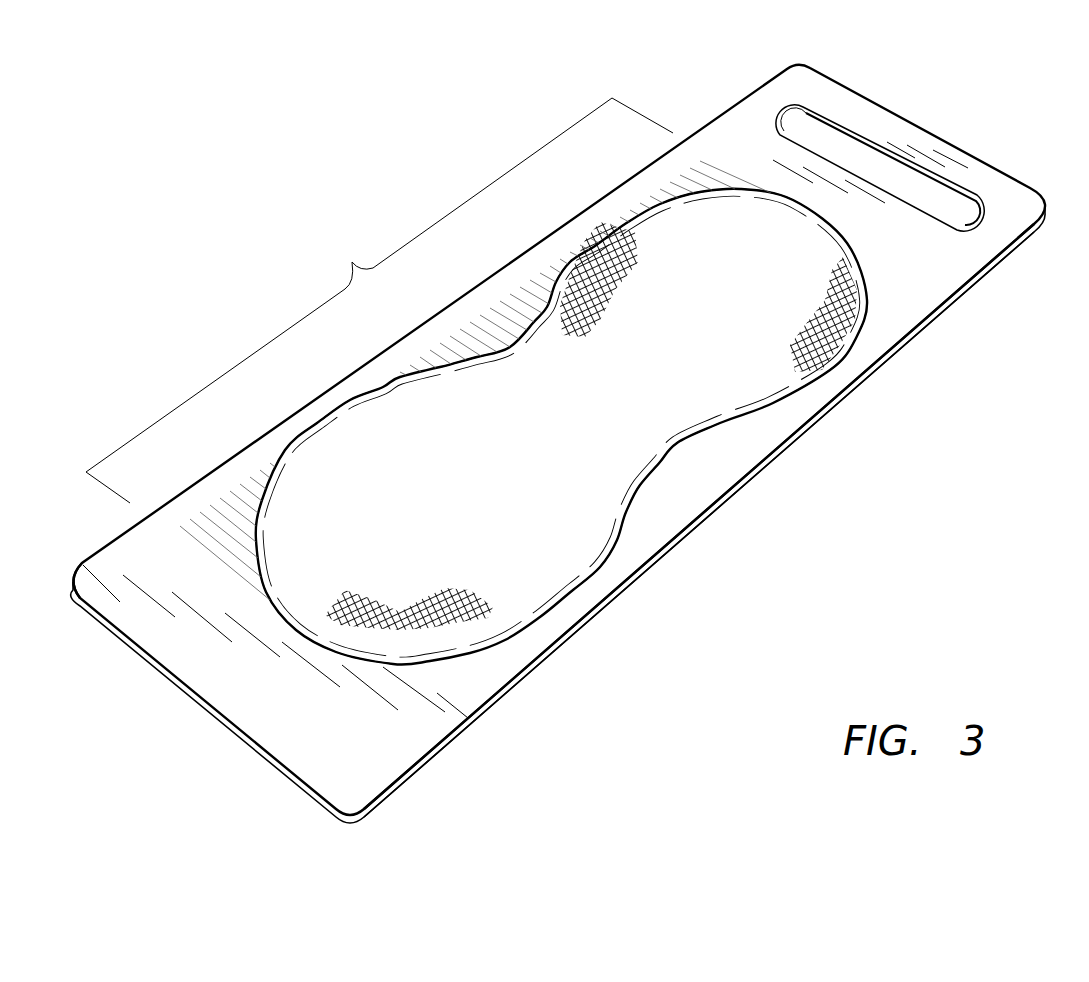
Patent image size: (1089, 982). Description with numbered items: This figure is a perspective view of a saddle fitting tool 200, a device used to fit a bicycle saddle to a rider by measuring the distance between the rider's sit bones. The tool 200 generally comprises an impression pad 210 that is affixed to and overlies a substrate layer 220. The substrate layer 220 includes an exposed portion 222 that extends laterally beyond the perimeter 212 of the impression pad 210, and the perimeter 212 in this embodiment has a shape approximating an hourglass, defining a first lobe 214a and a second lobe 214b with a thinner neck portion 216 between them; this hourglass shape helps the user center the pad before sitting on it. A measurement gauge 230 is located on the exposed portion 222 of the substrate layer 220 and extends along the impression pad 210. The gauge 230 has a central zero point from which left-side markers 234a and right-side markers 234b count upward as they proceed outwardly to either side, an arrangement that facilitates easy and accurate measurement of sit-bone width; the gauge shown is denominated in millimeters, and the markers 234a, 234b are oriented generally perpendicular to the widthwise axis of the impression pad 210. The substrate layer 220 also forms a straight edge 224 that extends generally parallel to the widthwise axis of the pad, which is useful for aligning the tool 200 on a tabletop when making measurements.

The saddle fitting tool 200 is at (549, 438).
The impression pad 210 is at (607, 370).
The perimeter 212 is at (833, 366).
The first lobe 214a is at (374, 525).
The second lobe 214b is at (713, 296).
The neck portion 216 is at (580, 410).
The substrate layer 220 is at (914, 274).
The exposed portion 222 is at (135, 550).
The straight edge 224 is at (727, 497).
The measurement gauge 230 is at (428, 349).
The left-side markers 234a is at (417, 350).
The right-side markers 234b is at (497, 315).